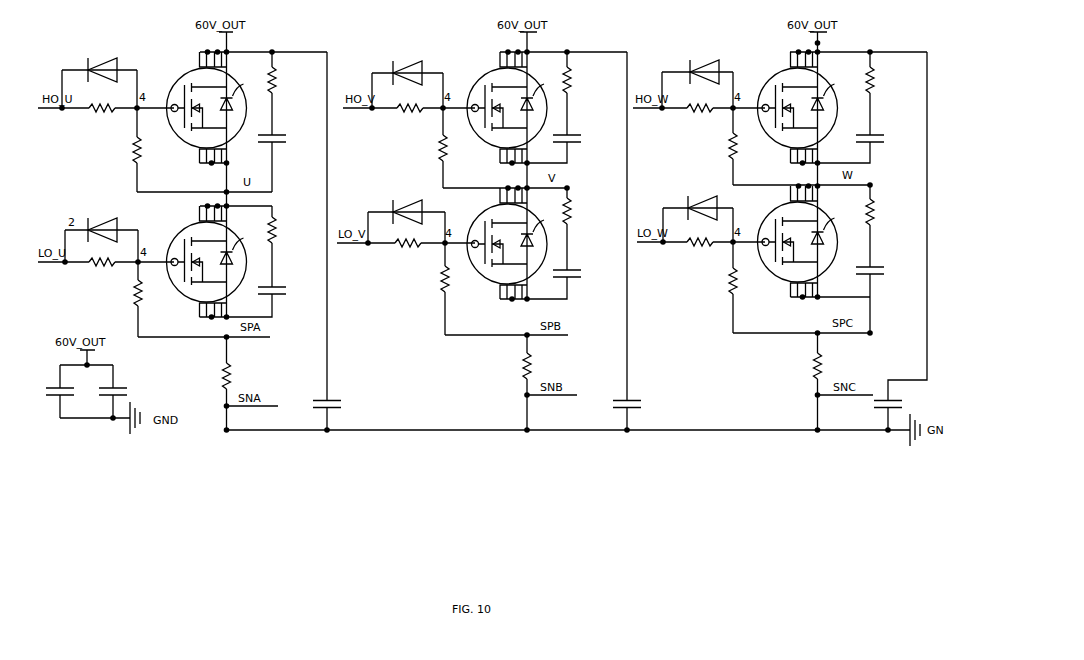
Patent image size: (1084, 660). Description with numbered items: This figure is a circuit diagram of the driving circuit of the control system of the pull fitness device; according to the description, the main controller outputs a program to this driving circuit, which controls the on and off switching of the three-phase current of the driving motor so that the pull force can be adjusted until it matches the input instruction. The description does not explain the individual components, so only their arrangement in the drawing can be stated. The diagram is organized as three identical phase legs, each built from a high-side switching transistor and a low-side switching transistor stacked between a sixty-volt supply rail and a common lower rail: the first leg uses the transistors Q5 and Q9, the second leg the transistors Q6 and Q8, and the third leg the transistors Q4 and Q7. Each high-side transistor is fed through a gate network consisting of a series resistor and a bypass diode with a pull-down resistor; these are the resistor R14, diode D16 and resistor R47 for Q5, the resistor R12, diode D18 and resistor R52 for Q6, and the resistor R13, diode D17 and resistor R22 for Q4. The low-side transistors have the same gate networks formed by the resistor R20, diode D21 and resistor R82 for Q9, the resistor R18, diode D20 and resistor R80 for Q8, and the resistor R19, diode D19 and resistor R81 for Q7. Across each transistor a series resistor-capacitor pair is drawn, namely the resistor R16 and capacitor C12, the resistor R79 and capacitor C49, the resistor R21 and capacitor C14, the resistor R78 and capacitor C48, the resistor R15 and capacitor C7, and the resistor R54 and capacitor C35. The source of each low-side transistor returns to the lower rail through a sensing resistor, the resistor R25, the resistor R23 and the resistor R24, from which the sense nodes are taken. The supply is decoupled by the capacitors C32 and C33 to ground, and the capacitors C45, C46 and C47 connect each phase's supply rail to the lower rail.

The high-side MOSFET Q5 (U phase) Q5 is at (215, 107).
The low-side MOSFET Q9 (U phase) Q9 is at (215, 261).
The high-side MOSFET Q6 (V phase) Q6 is at (516, 107).
The low-side MOSFET Q8 (V phase) Q8 is at (516, 243).
The high-side MOSFET Q4 (W phase) Q4 is at (807, 107).
The low-side MOSFET Q7 (W phase) Q7 is at (807, 241).
The gate resistor R14 is at (102, 99).
The gate pull-down resistor R47 is at (149, 150).
The snubber resistor R16 is at (284, 93).
The snubber capacitor C12 is at (284, 161).
The gate diode D16 is at (103, 80).
The gate resistor R20 is at (102, 254).
The gate pull-down resistor R82 is at (150, 299).
The snubber resistor R79 is at (284, 246).
The snubber capacitor C49 is at (269, 299).
The gate diode D21 is at (105, 239).
The current sense resistor R25 is at (239, 371).
The decoupling capacitor C32 is at (72, 392).
The decoupling capacitor C33 is at (125, 392).
The bus capacitor C45 is at (339, 403).
The gate resistor R12 is at (410, 99).
The gate pull-down resistor R52 is at (455, 148).
The snubber resistor R21 is at (579, 93).
The snubber capacitor C14 is at (566, 147).
The gate diode D18 is at (410, 82).
The gate resistor R18 is at (407, 235).
The gate pull-down resistor R80 is at (457, 289).
The snubber resistor R78 is at (579, 229).
The snubber capacitor C48 is at (566, 282).
The gate diode D20 is at (408, 219).
The current sense resistor R23 is at (539, 365).
The bus capacitor C46 is at (639, 403).
The gate resistor R13 is at (700, 99).
The gate pull-down resistor R22 is at (745, 146).
The snubber resistor R15 is at (882, 93).
The snubber capacitor C7 is at (860, 147).
The gate diode D17 is at (703, 82).
The gate resistor R19 is at (700, 234).
The gate pull-down resistor R81 is at (745, 287).
The snubber resistor R54 is at (882, 226).
The snubber capacitor C35 is at (864, 298).
The gate diode D19 is at (703, 217).
The current sense resistor R24 is at (830, 364).
The bus capacitor C47 is at (901, 403).